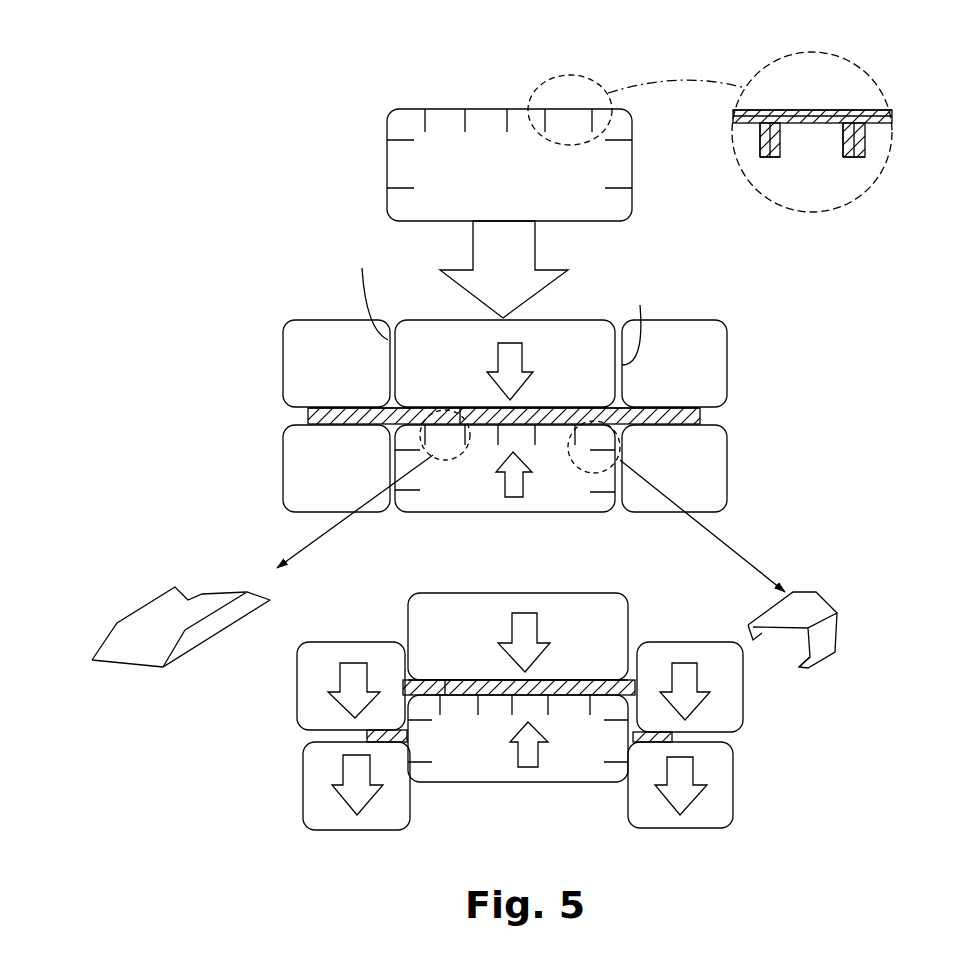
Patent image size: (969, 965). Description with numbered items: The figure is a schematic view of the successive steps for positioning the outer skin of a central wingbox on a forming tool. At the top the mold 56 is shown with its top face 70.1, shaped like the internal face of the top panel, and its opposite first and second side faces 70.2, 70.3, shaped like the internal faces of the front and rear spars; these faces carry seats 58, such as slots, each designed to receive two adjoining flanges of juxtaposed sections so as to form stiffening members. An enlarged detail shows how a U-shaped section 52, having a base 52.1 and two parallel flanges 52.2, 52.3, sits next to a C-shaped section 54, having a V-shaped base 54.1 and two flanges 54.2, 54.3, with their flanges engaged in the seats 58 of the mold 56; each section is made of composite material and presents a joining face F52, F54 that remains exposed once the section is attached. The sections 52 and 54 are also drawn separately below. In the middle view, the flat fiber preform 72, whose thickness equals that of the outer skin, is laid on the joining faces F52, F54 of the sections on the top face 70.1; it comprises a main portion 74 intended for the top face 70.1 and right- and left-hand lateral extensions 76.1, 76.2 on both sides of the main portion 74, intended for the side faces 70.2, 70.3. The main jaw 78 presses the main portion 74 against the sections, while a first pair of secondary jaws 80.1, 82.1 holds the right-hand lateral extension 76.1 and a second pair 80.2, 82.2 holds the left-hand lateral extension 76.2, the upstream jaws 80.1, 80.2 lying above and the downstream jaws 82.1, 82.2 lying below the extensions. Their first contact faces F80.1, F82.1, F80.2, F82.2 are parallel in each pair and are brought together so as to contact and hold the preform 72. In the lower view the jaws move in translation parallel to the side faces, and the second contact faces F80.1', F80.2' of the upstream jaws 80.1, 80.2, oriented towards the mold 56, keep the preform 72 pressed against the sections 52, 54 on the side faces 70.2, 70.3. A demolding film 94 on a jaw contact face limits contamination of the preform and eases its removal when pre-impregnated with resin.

The U-shaped section 52 is at (808, 107).
The base 52.1 is at (783, 110).
The flange 52.2 is at (785, 157).
The flange 52.3 is at (850, 160).
The C-shaped section 54 is at (880, 105).
The V-shaped base 54.1 is at (888, 115).
The flange 54.2 is at (865, 140).
The flange 54.3 is at (803, 670).
The mold 56 is at (573, 163).
The seat 58 is at (865, 150).
The top face 70.1 is at (512, 112).
The first side face 70.2 is at (392, 175).
The second side face 70.3 is at (625, 167).
The flat fiber preform 72 is at (408, 404).
The main portion 74 is at (548, 412).
The right-hand lateral extension 76.1 is at (310, 414).
The left-hand lateral extension 76.2 is at (700, 418).
The main jaw 78 is at (428, 345).
The upstream secondary jaw 80.1 is at (298, 335).
The upstream secondary jaw 80.2 is at (705, 332).
The downstream secondary jaw 82.1 is at (298, 447).
The downstream secondary jaw 82.2 is at (705, 458).
The demolding film 94 is at (468, 408).
The joining face F52 is at (820, 110).
The joining face F54 is at (862, 110).
The first contact face F80.1 is at (286, 536).
The second contact face F80.1' is at (365, 456).
The first contact face F80.2 is at (758, 552).
The second contact face F80.2' is at (660, 476).
The first contact face F82.1 is at (332, 427).
The first contact face F82.2 is at (675, 424).